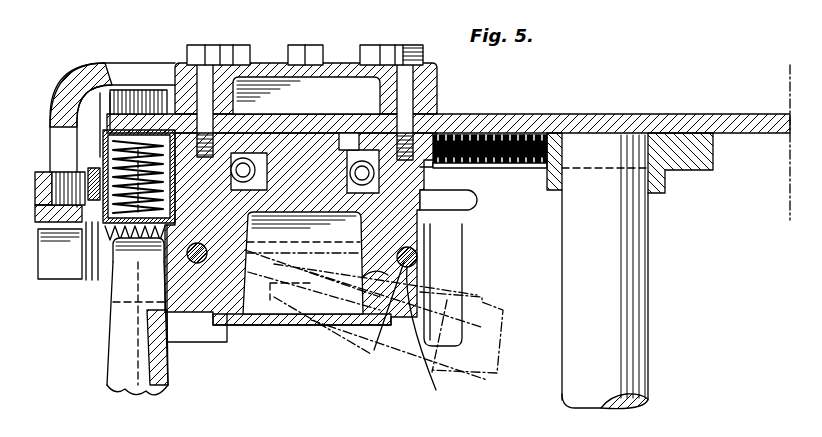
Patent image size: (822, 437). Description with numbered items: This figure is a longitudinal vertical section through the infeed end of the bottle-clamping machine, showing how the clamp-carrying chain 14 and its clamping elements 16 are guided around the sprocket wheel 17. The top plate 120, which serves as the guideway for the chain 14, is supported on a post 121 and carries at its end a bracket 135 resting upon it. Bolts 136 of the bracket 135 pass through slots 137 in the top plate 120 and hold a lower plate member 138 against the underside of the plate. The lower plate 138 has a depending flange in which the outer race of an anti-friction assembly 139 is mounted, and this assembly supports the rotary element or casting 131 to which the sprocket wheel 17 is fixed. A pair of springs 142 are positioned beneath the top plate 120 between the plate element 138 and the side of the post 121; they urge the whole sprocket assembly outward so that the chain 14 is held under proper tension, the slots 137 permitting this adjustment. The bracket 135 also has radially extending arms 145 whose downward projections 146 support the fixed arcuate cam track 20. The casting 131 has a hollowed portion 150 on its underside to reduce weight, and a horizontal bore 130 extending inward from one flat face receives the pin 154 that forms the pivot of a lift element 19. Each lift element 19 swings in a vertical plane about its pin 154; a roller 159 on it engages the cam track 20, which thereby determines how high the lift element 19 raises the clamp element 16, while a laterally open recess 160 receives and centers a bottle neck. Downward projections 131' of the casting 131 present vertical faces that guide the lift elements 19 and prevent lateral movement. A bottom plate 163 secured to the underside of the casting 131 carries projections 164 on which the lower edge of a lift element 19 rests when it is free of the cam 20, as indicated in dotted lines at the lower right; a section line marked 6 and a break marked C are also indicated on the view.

The slots 137 is at (432, 115).
The bracket 135 is at (327, 70).
The bolts 136 is at (229, 55).
The bottom plate 163 is at (260, 327).
The projections 164 is at (297, 329).
The hollowed portion 150 is at (362, 297).
The anti-friction assembly 139 is at (362, 162).
The sprocket wheel 17 is at (462, 200).
The lower plate member 138 is at (423, 167).
The springs 142 is at (535, 130).
The top plate 120 is at (711, 128).
The post 121 is at (623, 297).
The horizontal bore 130 is at (423, 250).
The pin 154 is at (196, 263).
The rotary element 131 is at (389, 327).
The downward projections 131' is at (355, 305).
The lift elements 19 is at (478, 327).
The section line 6- 6 is at (103, 153).
The radially extending arms 145 is at (145, 75).
The roller 159 is at (95, 165).
The downward projections 146 is at (43, 131).
The clamping elements 16 is at (110, 294).
The chain 14 is at (78, 231).
The cam track 20 is at (33, 226).
The recess 160 is at (108, 312).
The break point C is at (113, 390).